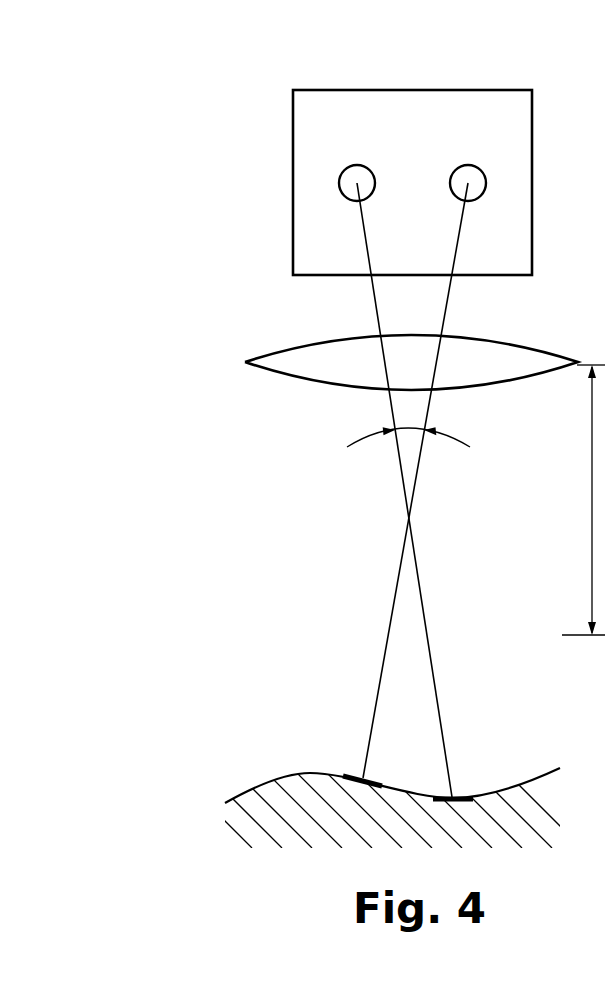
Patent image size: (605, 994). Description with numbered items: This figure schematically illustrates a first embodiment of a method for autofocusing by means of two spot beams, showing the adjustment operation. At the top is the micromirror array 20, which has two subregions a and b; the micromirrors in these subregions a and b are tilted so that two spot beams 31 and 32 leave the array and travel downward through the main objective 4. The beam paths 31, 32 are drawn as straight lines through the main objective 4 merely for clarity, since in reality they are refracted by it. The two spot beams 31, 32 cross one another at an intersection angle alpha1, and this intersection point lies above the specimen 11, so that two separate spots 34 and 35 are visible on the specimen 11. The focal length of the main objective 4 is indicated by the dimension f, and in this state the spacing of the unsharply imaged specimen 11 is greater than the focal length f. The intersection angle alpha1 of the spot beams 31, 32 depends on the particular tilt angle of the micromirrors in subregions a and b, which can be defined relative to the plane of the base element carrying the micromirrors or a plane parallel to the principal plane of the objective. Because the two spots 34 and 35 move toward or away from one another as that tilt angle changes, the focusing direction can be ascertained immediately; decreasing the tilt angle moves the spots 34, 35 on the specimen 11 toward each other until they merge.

The micromirror array 20 is at (415, 125).
The subregion of micromirror array a is at (339, 183).
The subregion of micromirror array b is at (486, 183).
The main objective 4 is at (302, 365).
The spot beam 31 is at (398, 473).
The spot beam 32 is at (422, 473).
The intersection angle alpha1 is at (408, 419).
The focal length of main objective f is at (583, 500).
The specimen 11 is at (257, 776).
The spot 34 is at (353, 773).
The spot 35 is at (467, 797).